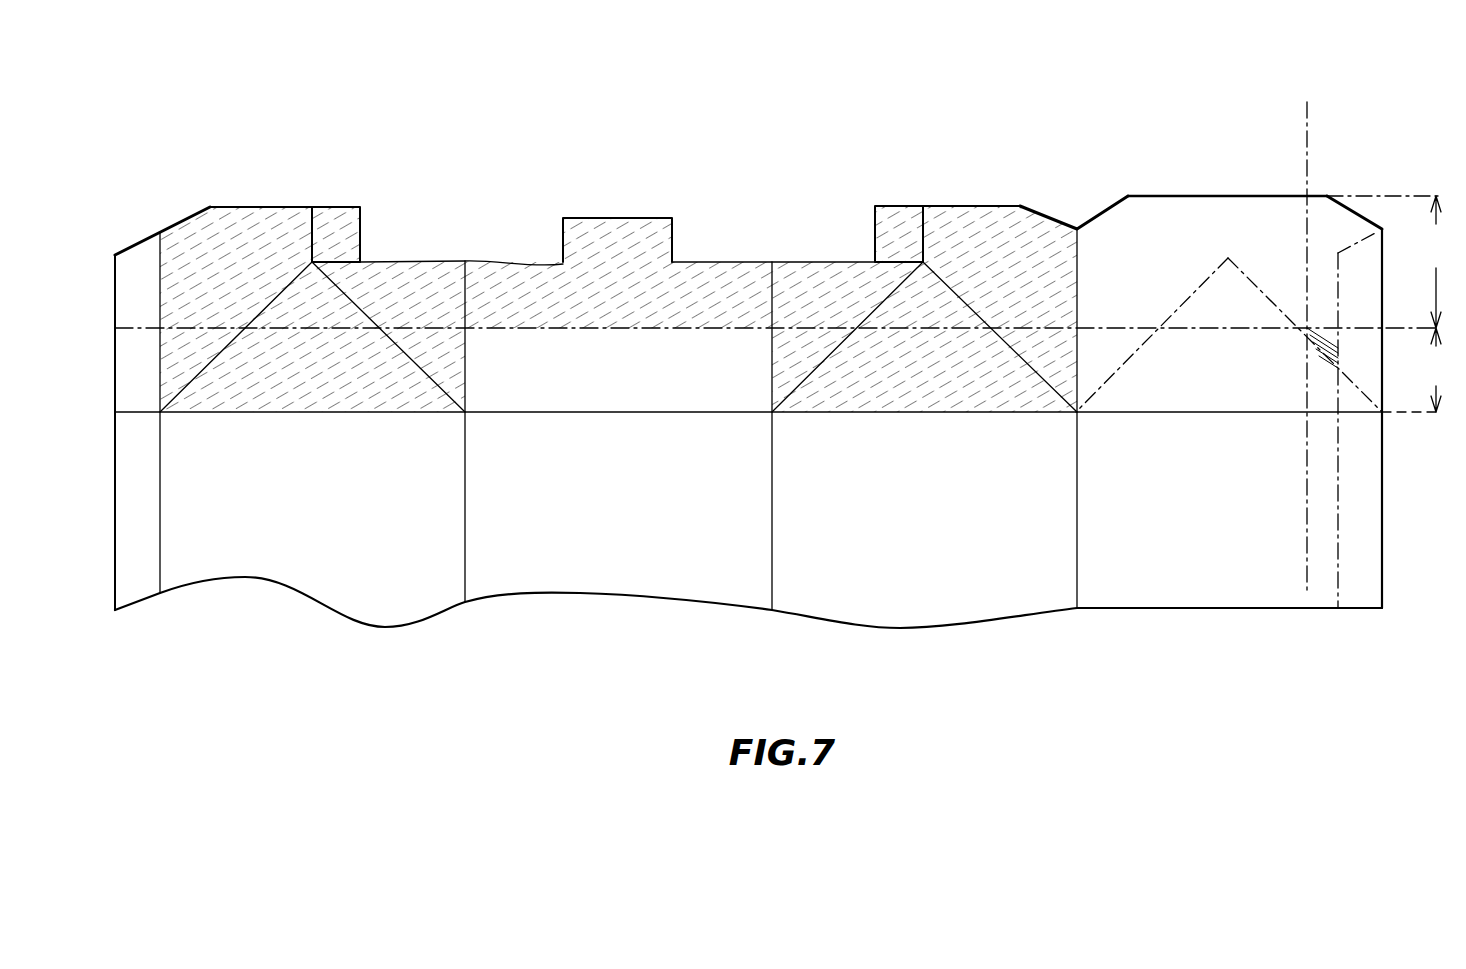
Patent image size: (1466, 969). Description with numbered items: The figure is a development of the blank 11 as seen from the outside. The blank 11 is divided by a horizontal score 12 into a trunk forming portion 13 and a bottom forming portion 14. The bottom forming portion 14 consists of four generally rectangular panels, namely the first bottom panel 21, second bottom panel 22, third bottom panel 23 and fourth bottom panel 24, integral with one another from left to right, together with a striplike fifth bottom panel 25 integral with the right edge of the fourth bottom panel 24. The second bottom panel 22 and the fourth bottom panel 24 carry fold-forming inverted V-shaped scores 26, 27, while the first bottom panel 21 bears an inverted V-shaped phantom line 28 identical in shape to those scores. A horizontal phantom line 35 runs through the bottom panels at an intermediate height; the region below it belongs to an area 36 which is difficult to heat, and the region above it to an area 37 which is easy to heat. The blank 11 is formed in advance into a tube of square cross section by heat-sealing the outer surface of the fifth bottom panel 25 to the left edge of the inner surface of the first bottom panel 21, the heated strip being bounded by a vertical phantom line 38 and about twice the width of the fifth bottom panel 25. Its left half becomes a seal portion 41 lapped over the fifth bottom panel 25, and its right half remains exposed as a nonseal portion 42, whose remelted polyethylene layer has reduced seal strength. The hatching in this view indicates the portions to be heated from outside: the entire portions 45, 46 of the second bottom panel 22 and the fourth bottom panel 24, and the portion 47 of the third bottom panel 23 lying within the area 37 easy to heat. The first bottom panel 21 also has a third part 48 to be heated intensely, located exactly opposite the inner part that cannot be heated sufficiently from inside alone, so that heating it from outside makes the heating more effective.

The blank 11 is at (920, 678).
The horizontal score 12 is at (576, 413).
The trunk forming portion 13 is at (1372, 529).
The bottom forming portion 14 is at (1096, 170).
The first bottom panel 21 is at (1228, 196).
The second bottom panel 22 is at (945, 206).
The third bottom panel 23 is at (588, 218).
The fourth bottom panel 24 is at (285, 207).
The fifth bottom panel 25 is at (150, 270).
The inverted V-shaped score 26 is at (1038, 377).
The inverted V-shaped score 27 is at (433, 381).
The inverted V-shaped phantom line 28 is at (1093, 388).
The horizontal phantom line 35 is at (657, 328).
The area difficult to heat 36 is at (1417, 370).
The area easy to heat 37 is at (1390, 262).
The vertical phantom line 38 is at (1313, 150).
The seal portion 41 is at (1358, 257).
The nonseal portion 42 is at (1315, 296).
The portion to be heated 45 is at (987, 268).
The portion to be heated 46 is at (385, 288).
The portion to be heated 47 is at (705, 285).
The third part to be heated intensely 48 is at (1327, 352).